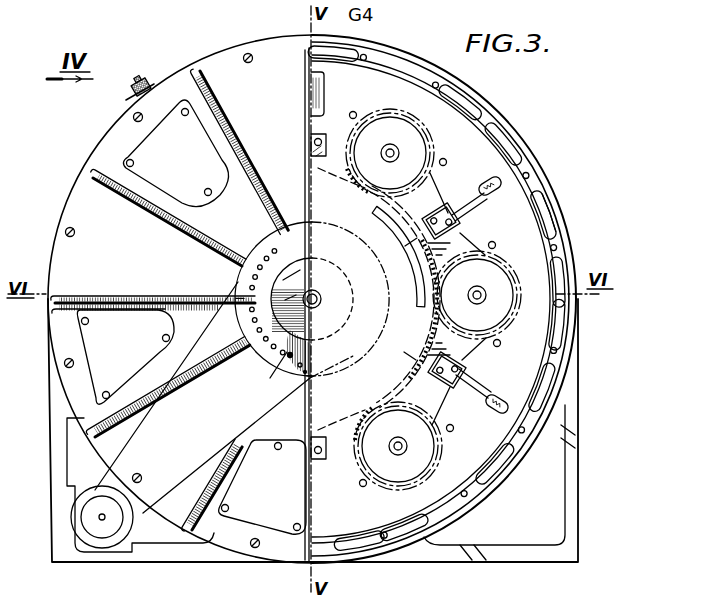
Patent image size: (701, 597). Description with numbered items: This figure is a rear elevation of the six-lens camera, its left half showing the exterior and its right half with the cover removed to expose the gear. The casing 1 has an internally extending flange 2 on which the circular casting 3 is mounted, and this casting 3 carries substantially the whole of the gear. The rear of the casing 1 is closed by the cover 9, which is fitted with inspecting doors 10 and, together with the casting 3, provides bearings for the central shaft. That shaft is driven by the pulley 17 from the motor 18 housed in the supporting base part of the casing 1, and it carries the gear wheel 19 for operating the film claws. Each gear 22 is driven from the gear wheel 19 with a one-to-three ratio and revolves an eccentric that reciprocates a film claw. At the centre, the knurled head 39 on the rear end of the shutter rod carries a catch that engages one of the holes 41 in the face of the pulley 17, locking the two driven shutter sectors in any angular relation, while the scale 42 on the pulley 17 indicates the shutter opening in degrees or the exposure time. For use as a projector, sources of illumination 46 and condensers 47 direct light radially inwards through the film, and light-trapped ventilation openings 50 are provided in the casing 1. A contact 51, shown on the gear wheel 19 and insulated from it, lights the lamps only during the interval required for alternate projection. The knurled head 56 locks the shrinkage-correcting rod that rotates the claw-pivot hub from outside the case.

The casing 1 is at (498, 121).
The internally extending flange 2 is at (373, 96).
The circular casting 3 is at (330, 137).
The cover 9 is at (120, 205).
The inspecting doors 10 is at (172, 160).
The pulley 17 is at (392, 352).
The motor 18 is at (78, 518).
The gear wheel 19 is at (379, 299).
The gear 22 is at (415, 118).
The knurled head 39 is at (318, 313).
The holes 41 is at (284, 345).
The scale 42 is at (252, 268).
The sources of illumination 46 is at (502, 185).
The condensers 47 is at (500, 205).
The light-trapped ventilation openings 50 is at (528, 166).
The contact 51 is at (392, 256).
The knurled head 56 is at (146, 78).